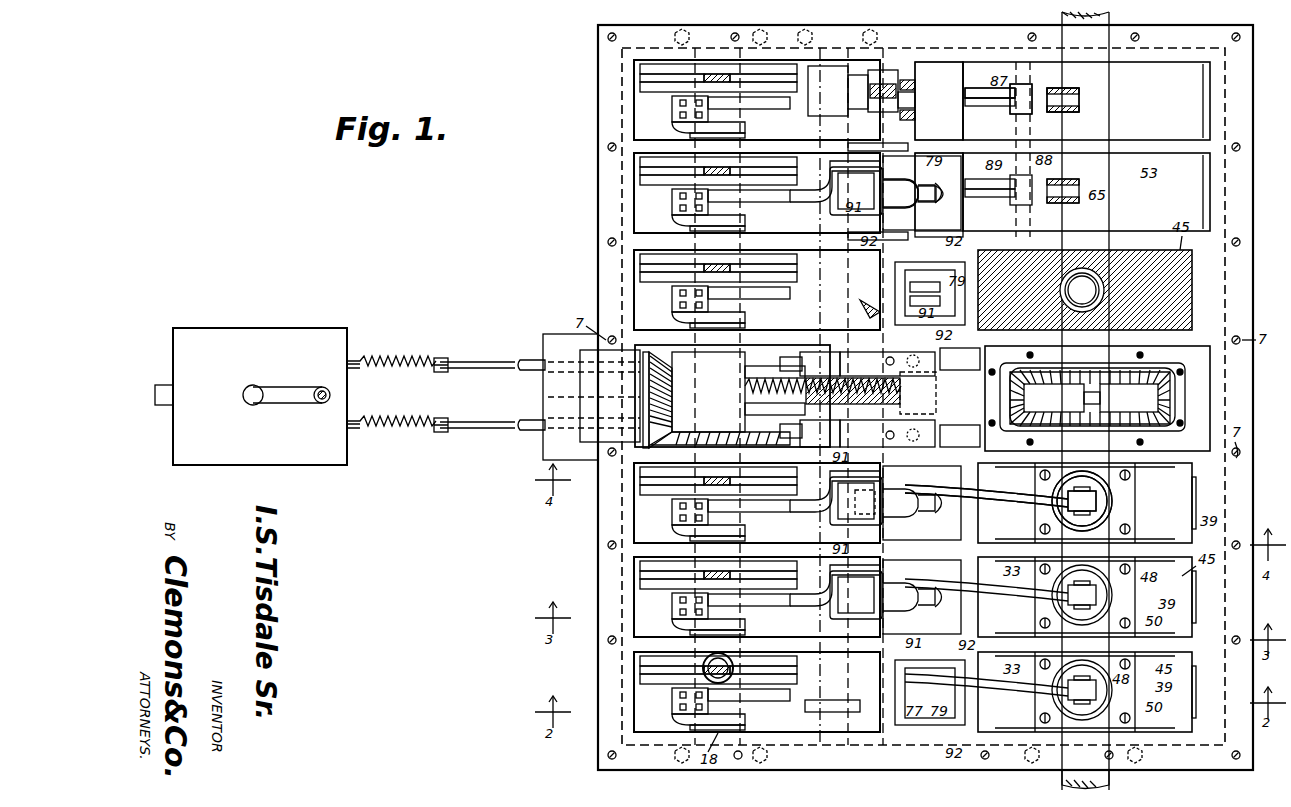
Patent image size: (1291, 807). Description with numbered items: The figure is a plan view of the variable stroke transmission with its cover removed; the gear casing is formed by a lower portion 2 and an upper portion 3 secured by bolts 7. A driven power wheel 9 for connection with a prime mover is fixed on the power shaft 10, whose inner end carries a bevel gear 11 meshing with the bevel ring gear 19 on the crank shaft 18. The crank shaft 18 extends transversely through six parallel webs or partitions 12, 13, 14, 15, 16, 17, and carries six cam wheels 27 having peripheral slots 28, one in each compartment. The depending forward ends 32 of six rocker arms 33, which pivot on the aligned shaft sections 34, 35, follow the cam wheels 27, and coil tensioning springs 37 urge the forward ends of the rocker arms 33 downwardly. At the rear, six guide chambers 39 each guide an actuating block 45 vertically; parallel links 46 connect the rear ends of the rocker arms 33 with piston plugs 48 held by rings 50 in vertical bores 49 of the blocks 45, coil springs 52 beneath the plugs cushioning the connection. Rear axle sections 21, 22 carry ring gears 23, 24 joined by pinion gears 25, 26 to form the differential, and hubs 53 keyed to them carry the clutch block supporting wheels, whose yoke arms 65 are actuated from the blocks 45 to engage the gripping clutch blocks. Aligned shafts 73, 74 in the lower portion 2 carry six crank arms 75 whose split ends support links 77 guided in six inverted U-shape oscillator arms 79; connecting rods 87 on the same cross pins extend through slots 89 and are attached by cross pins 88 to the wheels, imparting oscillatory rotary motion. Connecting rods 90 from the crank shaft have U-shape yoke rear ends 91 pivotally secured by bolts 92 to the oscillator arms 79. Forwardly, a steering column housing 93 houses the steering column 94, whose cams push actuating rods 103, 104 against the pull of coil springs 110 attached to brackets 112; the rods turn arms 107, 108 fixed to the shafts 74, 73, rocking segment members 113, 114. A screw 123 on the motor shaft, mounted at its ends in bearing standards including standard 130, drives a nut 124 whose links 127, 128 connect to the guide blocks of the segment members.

The lower portion 2 is at (1232, 500).
The upper portion 3 is at (1234, 298).
The bolts 7 is at (606, 242).
The driven power wheel 9 is at (580, 388).
The power shaft 10 is at (580, 410).
The bevel gear 11 is at (732, 395).
The web or partition 12 is at (764, 650).
The web or partition 13 is at (773, 548).
The web or partition 14 is at (952, 452).
The web or partition 15 is at (960, 357).
The web or partition 16 is at (939, 195).
The web or partition 17 is at (936, 128).
The crank shaft 18 is at (708, 392).
The bevel ring gear 19 is at (710, 430).
The rear axle section 21 is at (1085, 401).
The rear axle section 22 is at (1110, 785).
The ring gear 23 is at (1054, 398).
The ring gear 24 is at (1121, 398).
The pinion gear 25 is at (1012, 396).
The pinion gear 26 is at (1160, 392).
The cam wheels 27 is at (658, 92).
The peripheral slots 28 is at (643, 78).
The depending forward ends 32 is at (714, 74).
The rocker arms 33 is at (1008, 494).
The shaft section 34 is at (869, 305).
The shaft section 35 is at (866, 512).
The coil tensioning springs 37 is at (712, 680).
The guide chambers or housings 39 is at (1190, 296).
The actuating block 45 is at (1050, 503).
The parallel links 46 is at (1100, 512).
The piston plugs 48 is at (1100, 500).
The vertical bores 49 is at (1082, 268).
The rings 50 is at (1098, 508).
The coil springs 52 is at (1080, 310).
The hubs 53 is at (1062, 146).
The yoke arms 65 is at (1080, 98).
The shaft 73 is at (820, 128).
The shaft 74 is at (824, 724).
The crank arms 75 is at (872, 112).
The links 77 is at (916, 100).
The oscillator arms 79 is at (915, 82).
The connecting rods 87 is at (930, 200).
The cross pins 88 is at (1016, 126).
The slots 89 is at (976, 88).
The connecting rods 90 is at (766, 100).
The U-shape yoke rear ends 91 is at (926, 278).
The bolts 92 is at (878, 147).
The steering column housing 93 is at (312, 328).
The steering column 94 is at (300, 388).
The actuating rod 103 is at (522, 420).
The actuating rod 104 is at (522, 370).
The arm 107 is at (810, 441).
The arm 108 is at (818, 354).
The coil spring 110 is at (415, 368).
The brackets 112 is at (444, 372).
The segment member 113 is at (875, 352).
The segment member 114 is at (880, 447).
The screw 123 is at (823, 379).
The nut 124 is at (775, 412).
The link 127 is at (887, 366).
The link 128 is at (887, 433).
The bearing standard 130 is at (940, 395).